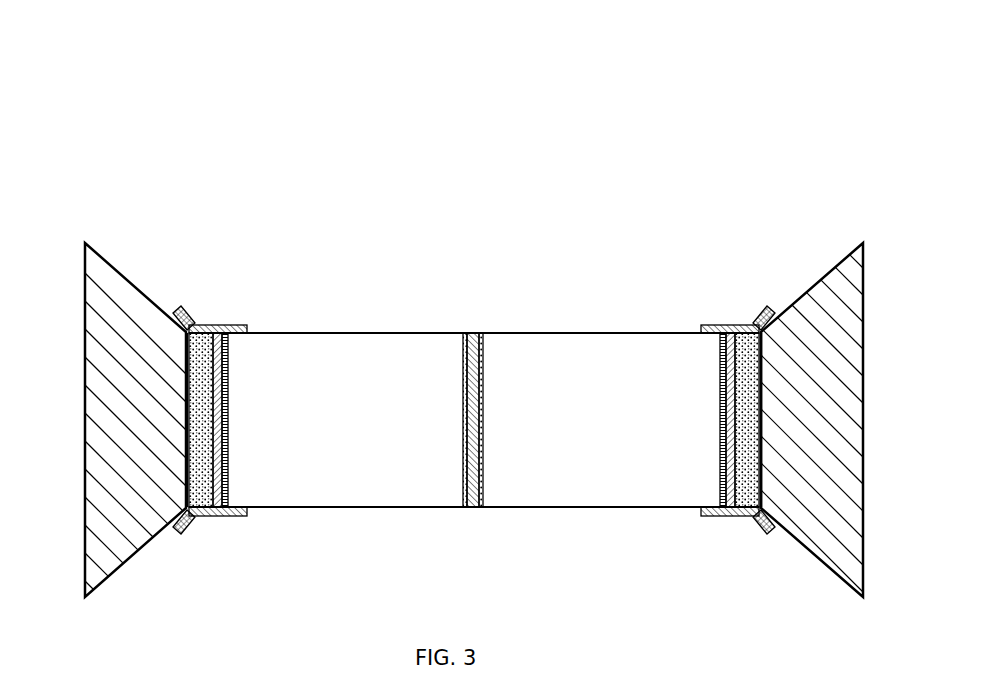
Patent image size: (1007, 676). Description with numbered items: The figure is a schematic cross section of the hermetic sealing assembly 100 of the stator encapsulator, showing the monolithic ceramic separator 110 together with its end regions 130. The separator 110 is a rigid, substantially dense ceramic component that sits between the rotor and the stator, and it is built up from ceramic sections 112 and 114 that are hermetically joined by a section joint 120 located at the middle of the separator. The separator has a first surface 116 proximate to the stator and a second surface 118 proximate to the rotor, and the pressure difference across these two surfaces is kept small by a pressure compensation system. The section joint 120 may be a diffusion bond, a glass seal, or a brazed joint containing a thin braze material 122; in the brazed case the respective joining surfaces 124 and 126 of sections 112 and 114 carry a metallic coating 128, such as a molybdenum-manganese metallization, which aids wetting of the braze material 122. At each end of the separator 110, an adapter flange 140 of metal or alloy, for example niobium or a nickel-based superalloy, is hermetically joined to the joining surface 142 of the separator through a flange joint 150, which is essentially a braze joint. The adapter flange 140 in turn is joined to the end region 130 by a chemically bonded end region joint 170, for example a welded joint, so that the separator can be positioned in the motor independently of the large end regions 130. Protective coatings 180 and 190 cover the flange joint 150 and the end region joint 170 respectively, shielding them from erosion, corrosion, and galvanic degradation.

The sealing assembly 100 is at (786, 54).
The monolithic ceramic separator 110 is at (385, 326).
The ceramic section 112 is at (315, 508).
The ceramic section 114 is at (565, 508).
The first surface 116 is at (306, 332).
The second surface 118 is at (322, 334).
The section joint 120 is at (470, 515).
The braze material 122 is at (485, 358).
The joining surface 124 is at (463, 418).
The joining surface 126 is at (484, 427).
The metallic coating 128 is at (482, 332).
The end region 130 is at (92, 518).
The adapter flange 140 is at (222, 384).
The joining surface 142 is at (224, 414).
The flange joint 150 is at (224, 466).
The end region joint 170 is at (188, 491).
The protective coating 180 is at (246, 517).
The protective coating 190 is at (188, 522).